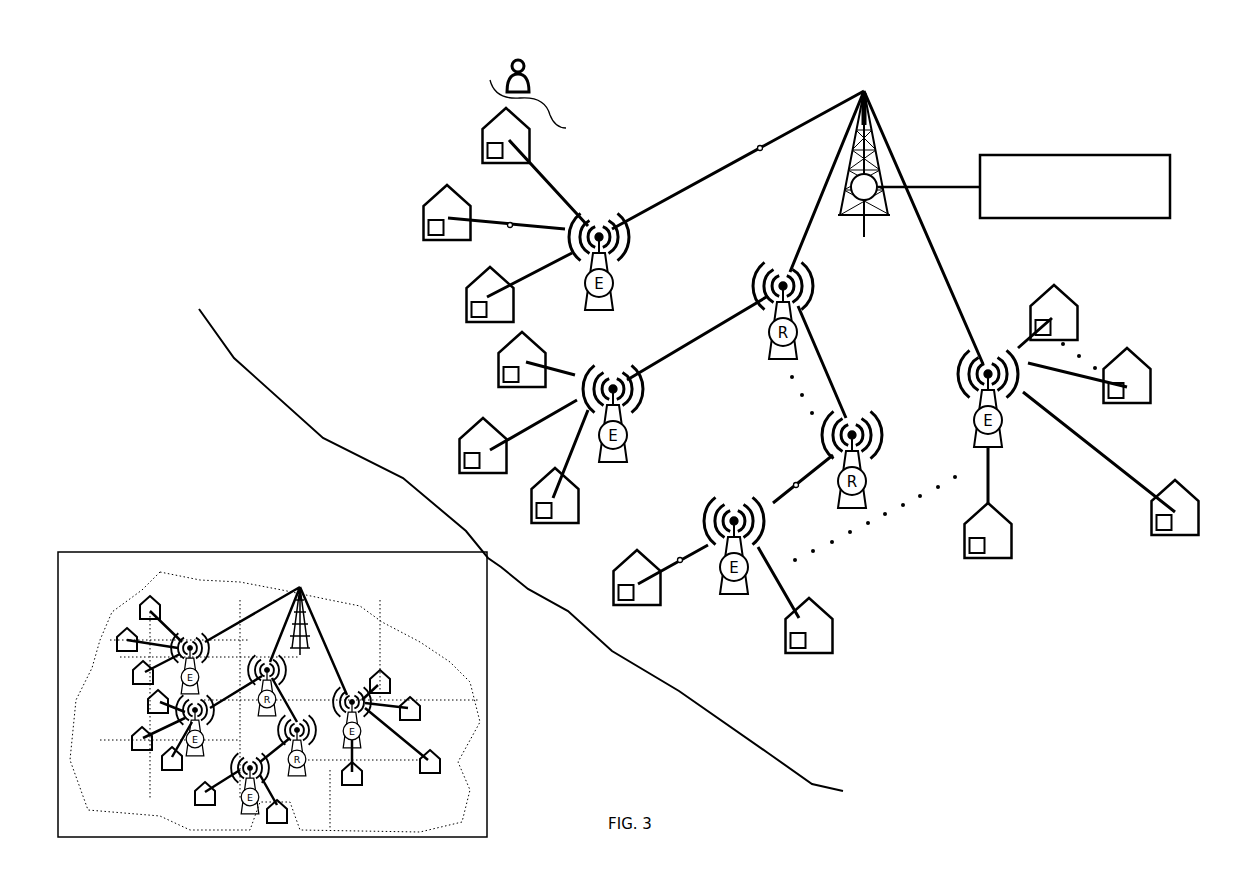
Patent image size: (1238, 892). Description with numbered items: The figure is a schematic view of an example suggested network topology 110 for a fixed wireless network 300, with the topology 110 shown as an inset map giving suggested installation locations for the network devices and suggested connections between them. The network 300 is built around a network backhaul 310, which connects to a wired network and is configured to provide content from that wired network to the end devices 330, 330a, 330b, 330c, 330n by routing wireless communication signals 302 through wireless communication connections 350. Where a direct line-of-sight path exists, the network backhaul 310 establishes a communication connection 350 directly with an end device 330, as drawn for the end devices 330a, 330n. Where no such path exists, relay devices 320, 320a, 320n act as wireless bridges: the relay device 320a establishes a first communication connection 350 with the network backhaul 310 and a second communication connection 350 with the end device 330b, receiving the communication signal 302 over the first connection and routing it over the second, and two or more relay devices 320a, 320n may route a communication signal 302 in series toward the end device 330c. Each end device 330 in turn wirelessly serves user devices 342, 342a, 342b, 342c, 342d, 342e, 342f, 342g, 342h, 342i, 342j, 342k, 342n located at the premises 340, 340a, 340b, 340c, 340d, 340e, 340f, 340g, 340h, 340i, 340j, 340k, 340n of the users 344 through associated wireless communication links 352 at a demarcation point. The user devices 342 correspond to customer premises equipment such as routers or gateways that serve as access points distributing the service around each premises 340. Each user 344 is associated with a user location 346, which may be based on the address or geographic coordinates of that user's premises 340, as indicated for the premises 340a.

The suggested network topology 110 is at (270, 552).
The network 300 is at (1048, 64).
The communication signal 302 is at (760, 145).
The network backhaul 310 is at (878, 103).
The relay device 320 is at (824, 351).
The relay device 320a is at (783, 282).
The relay device 320n is at (852, 431).
The end device 330 is at (795, 368).
The end device 330a is at (599, 233).
The end device 330b is at (615, 385).
The end device 330c is at (734, 517).
The end device 330n is at (988, 370).
The premises 340 is at (786, 375).
The premises 340a is at (479, 129).
The premises 340b is at (422, 193).
The premises 340c is at (464, 286).
The premises 340d is at (522, 353).
The premises 340e is at (458, 435).
The premises 340f is at (563, 495).
The premises 340g is at (632, 590).
The premises 340h is at (809, 629).
The premises 340i is at (994, 530).
The premises 340j is at (1150, 538).
The premises 340k is at (1150, 388).
The premises 340n is at (1080, 289).
The user device 342 is at (786, 375).
The user device 342a is at (486, 118).
The user device 342b is at (428, 197).
The user device 342c is at (480, 277).
The user device 342d is at (483, 363).
The user device 342e is at (476, 428).
The user device 342f is at (517, 502).
The user device 342g is at (597, 580).
The user device 342h is at (772, 634).
The user device 342i is at (951, 535).
The user device 342j is at (1137, 512).
The user device 342k is at (1144, 403).
The user device 342n is at (1058, 285).
The user 344 is at (516, 60).
The user location 346 is at (581, 98).
The communication connection 350 is at (712, 172).
The wireless communication link 352 is at (556, 190).